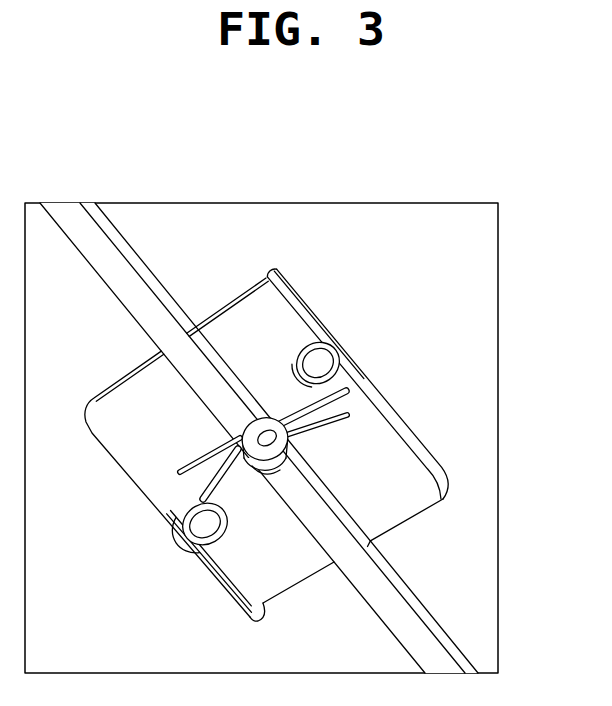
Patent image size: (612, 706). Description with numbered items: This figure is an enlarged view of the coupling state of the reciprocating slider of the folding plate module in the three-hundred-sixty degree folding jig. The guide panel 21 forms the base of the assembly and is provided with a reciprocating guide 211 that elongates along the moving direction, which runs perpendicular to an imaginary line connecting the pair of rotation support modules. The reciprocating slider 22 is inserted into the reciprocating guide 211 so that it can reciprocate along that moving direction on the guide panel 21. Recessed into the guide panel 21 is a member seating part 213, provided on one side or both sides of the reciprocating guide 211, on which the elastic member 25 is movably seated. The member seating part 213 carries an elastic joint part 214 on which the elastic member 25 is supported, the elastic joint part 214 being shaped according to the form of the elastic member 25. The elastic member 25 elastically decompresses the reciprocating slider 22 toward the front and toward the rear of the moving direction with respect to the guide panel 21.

The guide panel 21 is at (478, 262).
The reciprocating guide 211 is at (324, 518).
The member seating part 213 is at (399, 447).
The elastic joint part 214 is at (319, 363).
The reciprocating slider 22 is at (287, 425).
The elastic member 25 is at (314, 298).